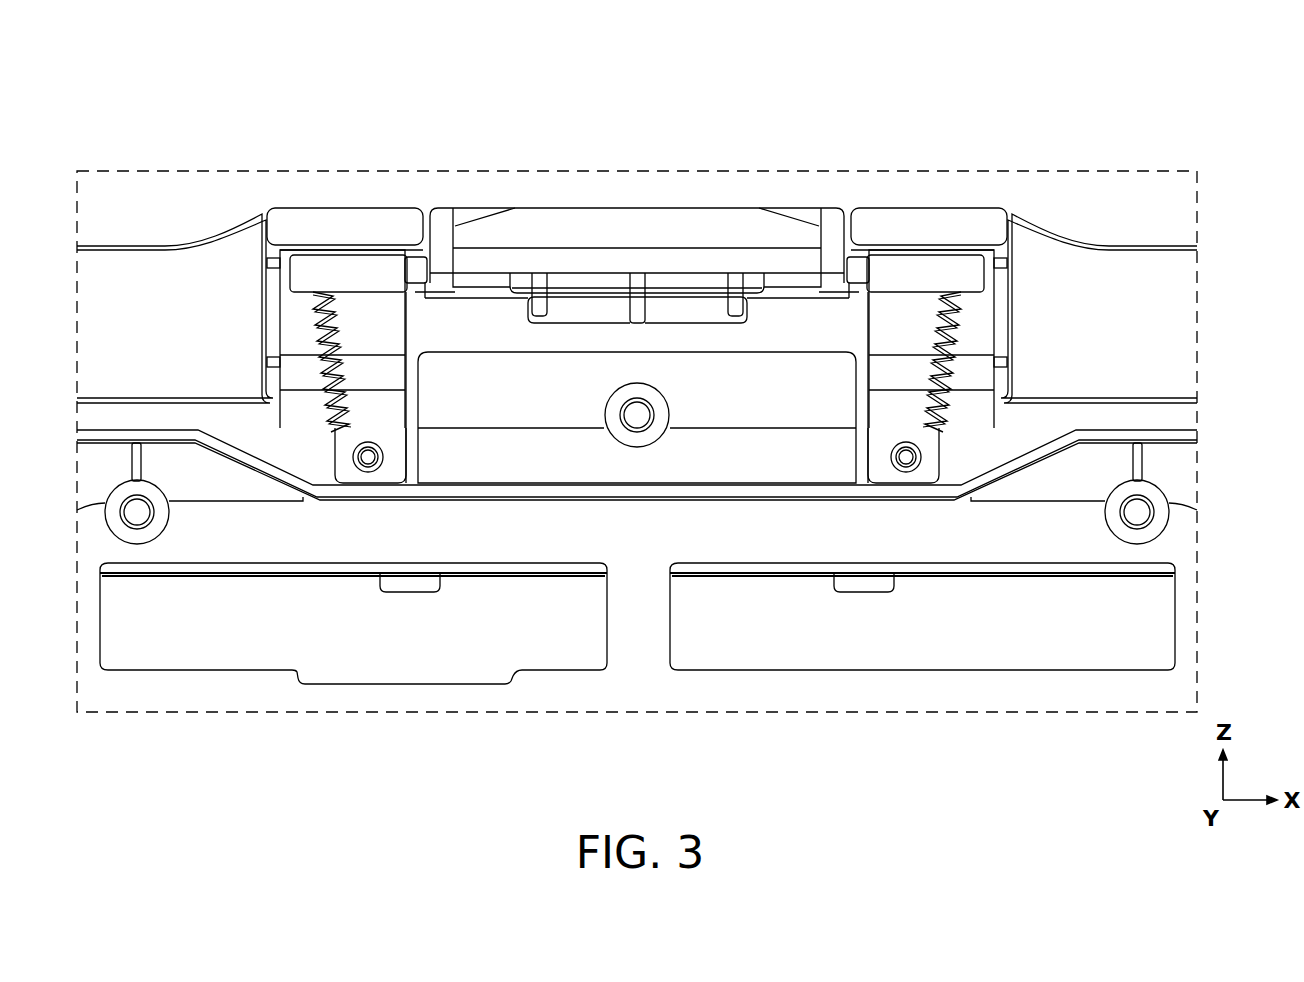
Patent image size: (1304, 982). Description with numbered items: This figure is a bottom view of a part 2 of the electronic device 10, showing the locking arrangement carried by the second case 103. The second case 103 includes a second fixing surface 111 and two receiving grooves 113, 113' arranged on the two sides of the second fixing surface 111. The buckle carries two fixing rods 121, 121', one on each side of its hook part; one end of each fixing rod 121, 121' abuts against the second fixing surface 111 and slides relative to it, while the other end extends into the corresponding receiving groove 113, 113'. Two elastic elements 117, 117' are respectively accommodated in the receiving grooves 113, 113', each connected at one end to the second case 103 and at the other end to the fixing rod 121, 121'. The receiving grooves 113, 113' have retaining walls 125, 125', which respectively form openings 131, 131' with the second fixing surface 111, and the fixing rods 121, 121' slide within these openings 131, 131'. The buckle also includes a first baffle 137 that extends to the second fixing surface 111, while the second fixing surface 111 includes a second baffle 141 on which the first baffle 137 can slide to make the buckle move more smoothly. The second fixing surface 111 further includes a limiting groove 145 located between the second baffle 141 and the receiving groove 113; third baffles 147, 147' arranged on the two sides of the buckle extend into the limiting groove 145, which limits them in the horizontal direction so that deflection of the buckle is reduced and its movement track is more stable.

The electronic device 10 is at (29, 124).
The part of the electronic device 2 is at (1155, 166).
The second case 103 is at (162, 272).
The second fixing surface 111 is at (828, 272).
The receiving groove 113 is at (1065, 339).
The receiving groove 113' is at (206, 339).
The elastic element 117 is at (1092, 362).
The elastic element 117' is at (179, 362).
The fixing rod 121 is at (930, 206).
The fixing rod 121' is at (342, 207).
The retaining wall 125 is at (929, 176).
The retaining wall 125' is at (345, 177).
The opening 131 is at (849, 205).
The opening 131' is at (422, 206).
The first baffle 137 is at (636, 311).
The second baffle 141 is at (642, 310).
The limiting groove 145 is at (705, 307).
The third baffle 147 is at (749, 210).
The third baffle 147' is at (525, 210).